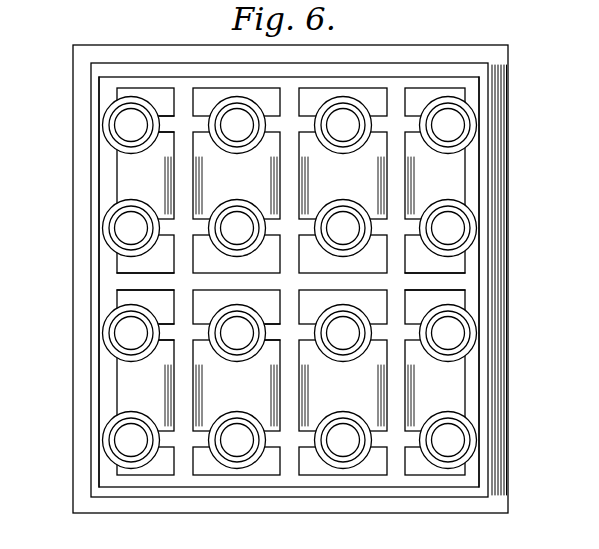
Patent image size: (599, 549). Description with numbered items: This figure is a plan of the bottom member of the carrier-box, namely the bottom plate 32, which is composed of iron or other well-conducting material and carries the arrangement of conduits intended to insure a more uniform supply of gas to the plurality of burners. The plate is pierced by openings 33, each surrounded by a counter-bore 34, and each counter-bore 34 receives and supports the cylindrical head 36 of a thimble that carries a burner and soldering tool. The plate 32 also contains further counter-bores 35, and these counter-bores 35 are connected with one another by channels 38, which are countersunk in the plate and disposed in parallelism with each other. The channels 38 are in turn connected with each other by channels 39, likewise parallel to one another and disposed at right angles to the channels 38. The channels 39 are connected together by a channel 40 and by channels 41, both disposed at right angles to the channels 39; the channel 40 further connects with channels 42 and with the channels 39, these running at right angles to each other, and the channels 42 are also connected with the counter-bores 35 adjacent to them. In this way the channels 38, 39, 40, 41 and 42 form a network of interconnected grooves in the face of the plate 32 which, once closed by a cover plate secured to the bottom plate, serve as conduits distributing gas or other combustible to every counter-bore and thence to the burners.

The bottom plate 32 is at (71, 404).
The openings 33 is at (245, 318).
The counter-bores 34 is at (247, 354).
The counter-bores 35 is at (133, 153).
The cylindrical head 36 is at (277, 335).
The channels 38 is at (170, 131).
The channels 39 is at (393, 180).
The channel 40 is at (423, 280).
The channels 41 is at (430, 79).
The channels 42 is at (113, 372).